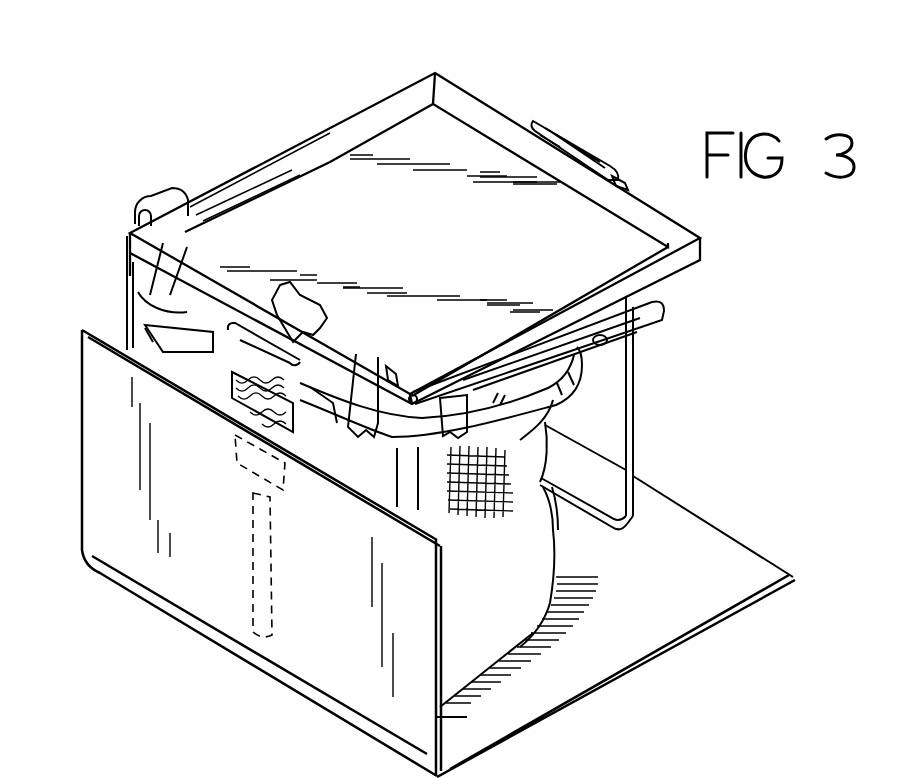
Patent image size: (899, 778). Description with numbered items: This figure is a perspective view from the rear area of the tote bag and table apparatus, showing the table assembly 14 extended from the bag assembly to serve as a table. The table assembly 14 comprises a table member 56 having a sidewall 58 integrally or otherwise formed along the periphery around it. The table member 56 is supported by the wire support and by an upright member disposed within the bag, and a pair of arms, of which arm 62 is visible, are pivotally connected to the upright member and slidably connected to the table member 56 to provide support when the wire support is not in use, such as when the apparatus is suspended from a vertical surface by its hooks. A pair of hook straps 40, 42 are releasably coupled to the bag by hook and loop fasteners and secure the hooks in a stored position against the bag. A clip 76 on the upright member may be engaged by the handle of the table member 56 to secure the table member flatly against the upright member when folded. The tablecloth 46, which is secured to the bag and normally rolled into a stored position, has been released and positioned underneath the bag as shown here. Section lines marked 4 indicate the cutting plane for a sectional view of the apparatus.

The table assembly 14 is at (708, 248).
The table member 56 is at (468, 148).
The sidewall 58 is at (340, 147).
The hook strap 42 is at (145, 316).
The clip 76 is at (305, 300).
The hook strap 40 is at (357, 437).
The arm 62 is at (658, 320).
The tablecloth 46 is at (745, 556).
The section line 4- 4 is at (667, 472).